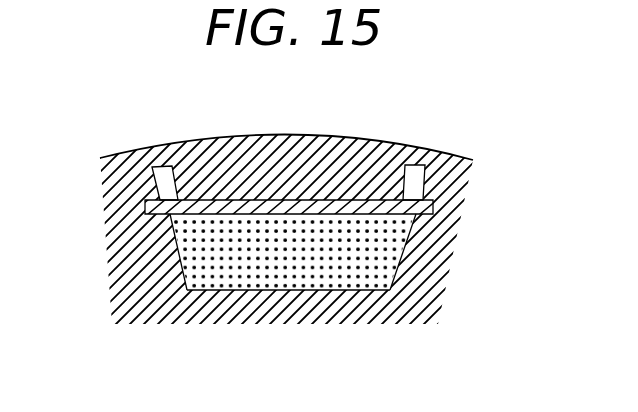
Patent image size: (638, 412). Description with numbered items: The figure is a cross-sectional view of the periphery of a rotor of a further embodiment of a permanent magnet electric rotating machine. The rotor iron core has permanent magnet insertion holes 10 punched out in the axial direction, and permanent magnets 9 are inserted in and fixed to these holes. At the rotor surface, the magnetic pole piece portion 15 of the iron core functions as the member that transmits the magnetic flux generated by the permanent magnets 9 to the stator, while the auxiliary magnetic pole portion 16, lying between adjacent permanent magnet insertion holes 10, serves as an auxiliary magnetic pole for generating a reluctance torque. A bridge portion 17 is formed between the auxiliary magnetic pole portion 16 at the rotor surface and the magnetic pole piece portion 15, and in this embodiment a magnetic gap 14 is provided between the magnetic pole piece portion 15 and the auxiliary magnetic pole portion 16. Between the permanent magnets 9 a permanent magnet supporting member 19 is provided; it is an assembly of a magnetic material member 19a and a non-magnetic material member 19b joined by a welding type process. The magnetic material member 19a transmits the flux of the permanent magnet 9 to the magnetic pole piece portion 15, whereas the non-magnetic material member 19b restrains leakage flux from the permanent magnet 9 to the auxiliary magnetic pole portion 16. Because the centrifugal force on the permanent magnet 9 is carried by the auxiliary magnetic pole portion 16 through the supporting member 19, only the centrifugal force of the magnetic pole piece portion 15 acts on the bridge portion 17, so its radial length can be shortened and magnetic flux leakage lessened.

The permanent magnet 9 is at (297, 290).
The permanent magnet insertion hole 10 is at (319, 221).
The magnetic gap 14 is at (189, 140).
The magnetic pole piece portion 15 is at (290, 134).
The auxiliary magnetic pole portion 16 is at (104, 160).
The bridge portion 17 is at (163, 174).
The permanent magnet supporting member 19 is at (322, 217).
The magnetic material member 19a is at (373, 217).
The non-magnetic material member 19b is at (155, 214).